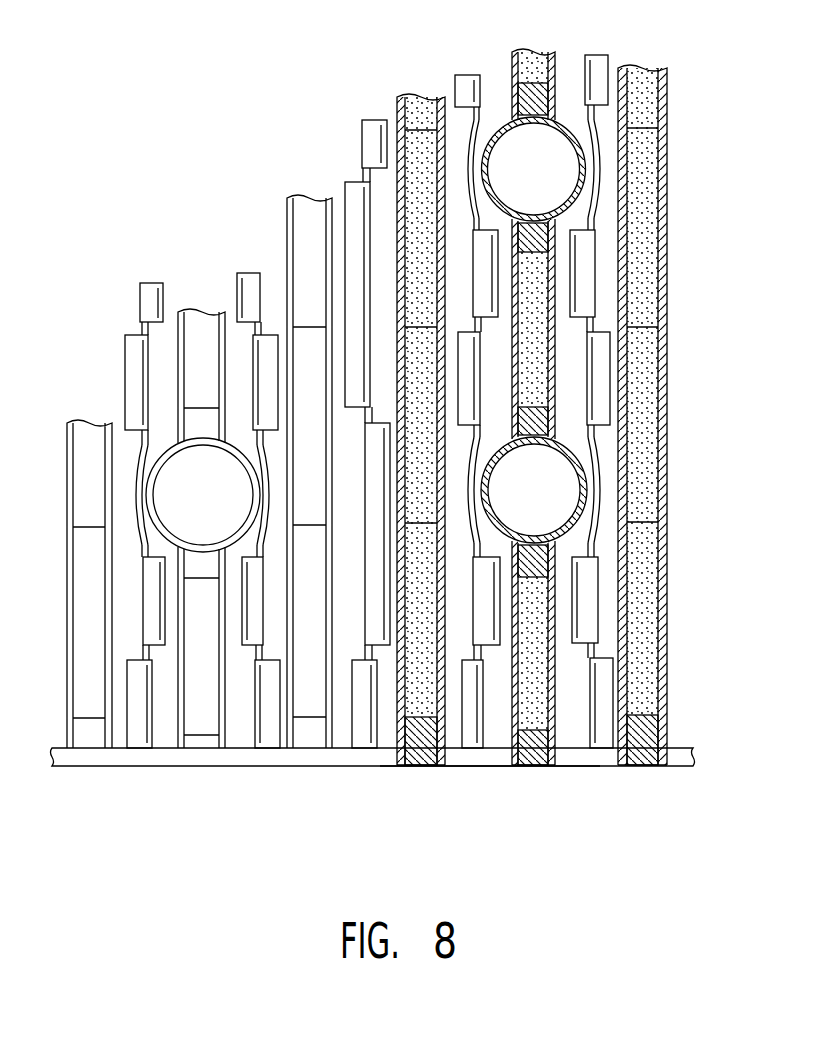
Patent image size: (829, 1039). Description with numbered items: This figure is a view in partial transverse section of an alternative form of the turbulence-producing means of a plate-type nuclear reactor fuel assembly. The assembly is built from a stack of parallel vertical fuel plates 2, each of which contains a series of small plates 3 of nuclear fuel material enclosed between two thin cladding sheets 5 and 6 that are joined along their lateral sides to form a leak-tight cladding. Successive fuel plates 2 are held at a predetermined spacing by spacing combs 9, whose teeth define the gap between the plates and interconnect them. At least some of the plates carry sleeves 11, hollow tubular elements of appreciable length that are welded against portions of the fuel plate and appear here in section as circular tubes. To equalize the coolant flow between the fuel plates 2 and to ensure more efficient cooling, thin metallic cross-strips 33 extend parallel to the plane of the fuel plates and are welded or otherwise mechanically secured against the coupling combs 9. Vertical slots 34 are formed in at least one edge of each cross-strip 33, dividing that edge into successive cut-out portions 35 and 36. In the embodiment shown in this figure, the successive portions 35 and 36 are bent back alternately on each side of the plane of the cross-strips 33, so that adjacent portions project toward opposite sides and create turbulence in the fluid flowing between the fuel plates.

The fuel plate 2 is at (421, 770).
The small plate of nuclear fuel material 3 is at (398, 397).
The cladding sheet 5 is at (397, 102).
The cladding sheet 6 is at (445, 95).
The spacing comb 9 is at (495, 768).
The sleeve 11 is at (570, 126).
The cross-strip 33 is at (343, 728).
The vertical slot 34 is at (598, 547).
The cut-out portion of cross-strip 35 is at (600, 723).
The cut-out portion of cross-strip 36 is at (585, 612).